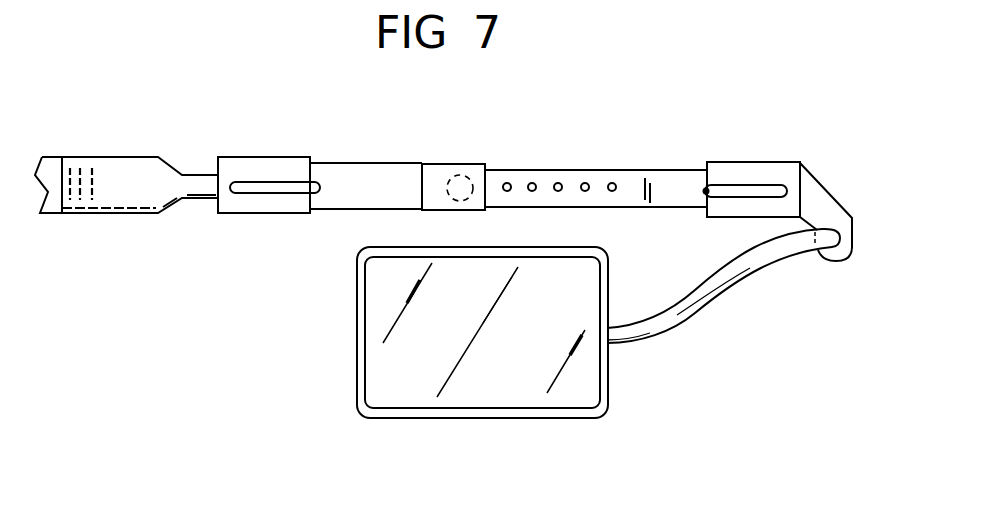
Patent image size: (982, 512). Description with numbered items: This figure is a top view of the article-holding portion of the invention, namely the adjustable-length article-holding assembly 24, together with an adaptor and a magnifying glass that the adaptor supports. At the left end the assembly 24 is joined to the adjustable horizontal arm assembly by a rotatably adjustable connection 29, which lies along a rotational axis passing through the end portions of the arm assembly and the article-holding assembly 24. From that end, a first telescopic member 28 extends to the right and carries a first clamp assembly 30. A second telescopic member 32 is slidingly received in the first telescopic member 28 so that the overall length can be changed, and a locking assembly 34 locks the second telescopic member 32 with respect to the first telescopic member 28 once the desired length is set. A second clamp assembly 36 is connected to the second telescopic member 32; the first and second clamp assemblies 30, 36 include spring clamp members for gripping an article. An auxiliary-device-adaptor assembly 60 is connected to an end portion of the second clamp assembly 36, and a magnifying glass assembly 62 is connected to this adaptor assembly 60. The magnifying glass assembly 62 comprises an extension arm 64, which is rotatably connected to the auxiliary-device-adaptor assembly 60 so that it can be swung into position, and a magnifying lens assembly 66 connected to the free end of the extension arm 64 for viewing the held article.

The adjustable-length article-holding assembly 24 is at (547, 170).
The first telescopic member 28 is at (372, 188).
The rotatably adjustable connection 29 is at (73, 157).
The first clamp assembly 30 is at (257, 157).
The second telescopic member 32 is at (668, 188).
The locking assembly 34 is at (460, 183).
The second clamp assembly 36 is at (752, 160).
The auxiliary-device-adaptor assembly 60 is at (823, 218).
The magnifying glass assembly 62 is at (627, 345).
The extension arm 64 is at (722, 287).
The magnifying lens assembly 66 is at (400, 338).